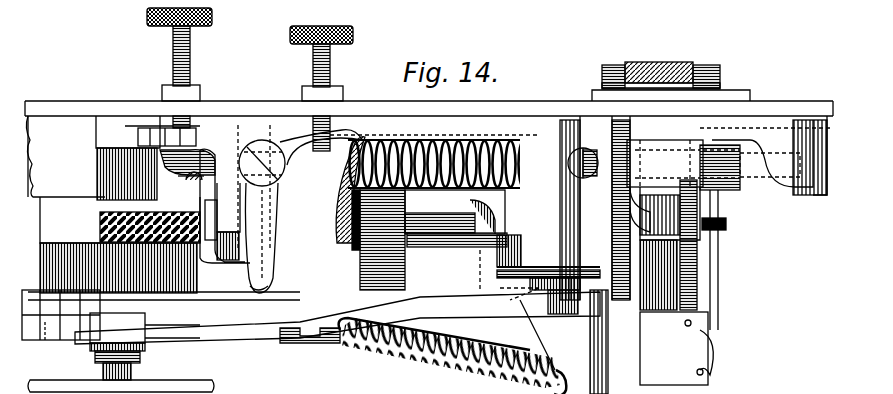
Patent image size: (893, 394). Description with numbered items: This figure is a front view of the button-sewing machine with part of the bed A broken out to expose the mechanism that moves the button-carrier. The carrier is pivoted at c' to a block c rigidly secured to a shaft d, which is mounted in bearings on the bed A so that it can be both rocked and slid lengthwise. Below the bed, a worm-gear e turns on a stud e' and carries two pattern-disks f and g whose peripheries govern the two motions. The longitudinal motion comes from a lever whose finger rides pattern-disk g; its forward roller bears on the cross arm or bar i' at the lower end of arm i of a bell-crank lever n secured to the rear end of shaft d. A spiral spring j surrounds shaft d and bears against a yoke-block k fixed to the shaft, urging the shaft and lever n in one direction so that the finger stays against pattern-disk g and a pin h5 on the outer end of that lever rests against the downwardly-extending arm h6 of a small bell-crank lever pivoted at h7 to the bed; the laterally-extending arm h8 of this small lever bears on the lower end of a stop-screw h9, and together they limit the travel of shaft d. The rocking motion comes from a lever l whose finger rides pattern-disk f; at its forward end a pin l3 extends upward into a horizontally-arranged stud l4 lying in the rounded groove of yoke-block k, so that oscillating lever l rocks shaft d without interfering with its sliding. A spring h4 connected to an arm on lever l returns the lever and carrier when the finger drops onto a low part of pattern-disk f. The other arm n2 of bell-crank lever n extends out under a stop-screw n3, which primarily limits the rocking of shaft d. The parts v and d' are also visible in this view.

The bed A is at (429, 98).
The stop-screw n3 is at (191, 70).
The stop-screw h9 is at (335, 74).
The block c is at (671, 76).
The pivot c' is at (675, 80).
The arm of bell-crank lever n2 is at (154, 137).
The bell-crank lever n is at (187, 162).
The pin v is at (182, 182).
The worm-gear e is at (133, 227).
The arm of bell-crank lever i is at (225, 206).
The cross arm or bar i' is at (272, 279).
The pivot of bell-crank lever h7 is at (261, 186).
The laterally-extending arm h8 is at (305, 153).
The downwardly-extending arm h6 is at (300, 225).
The pin or finger h5 is at (250, 287).
The shaft d is at (435, 155).
The spiral spring j is at (429, 240).
The yoke-block k is at (540, 262).
The lever l is at (430, 300).
The pin l3 is at (503, 288).
The stud l4 is at (520, 258).
The spring h4 is at (453, 347).
The pattern-disk f is at (32, 292).
The pattern-disk g is at (46, 340).
The stud e' is at (145, 346).
The rod d' is at (685, 235).